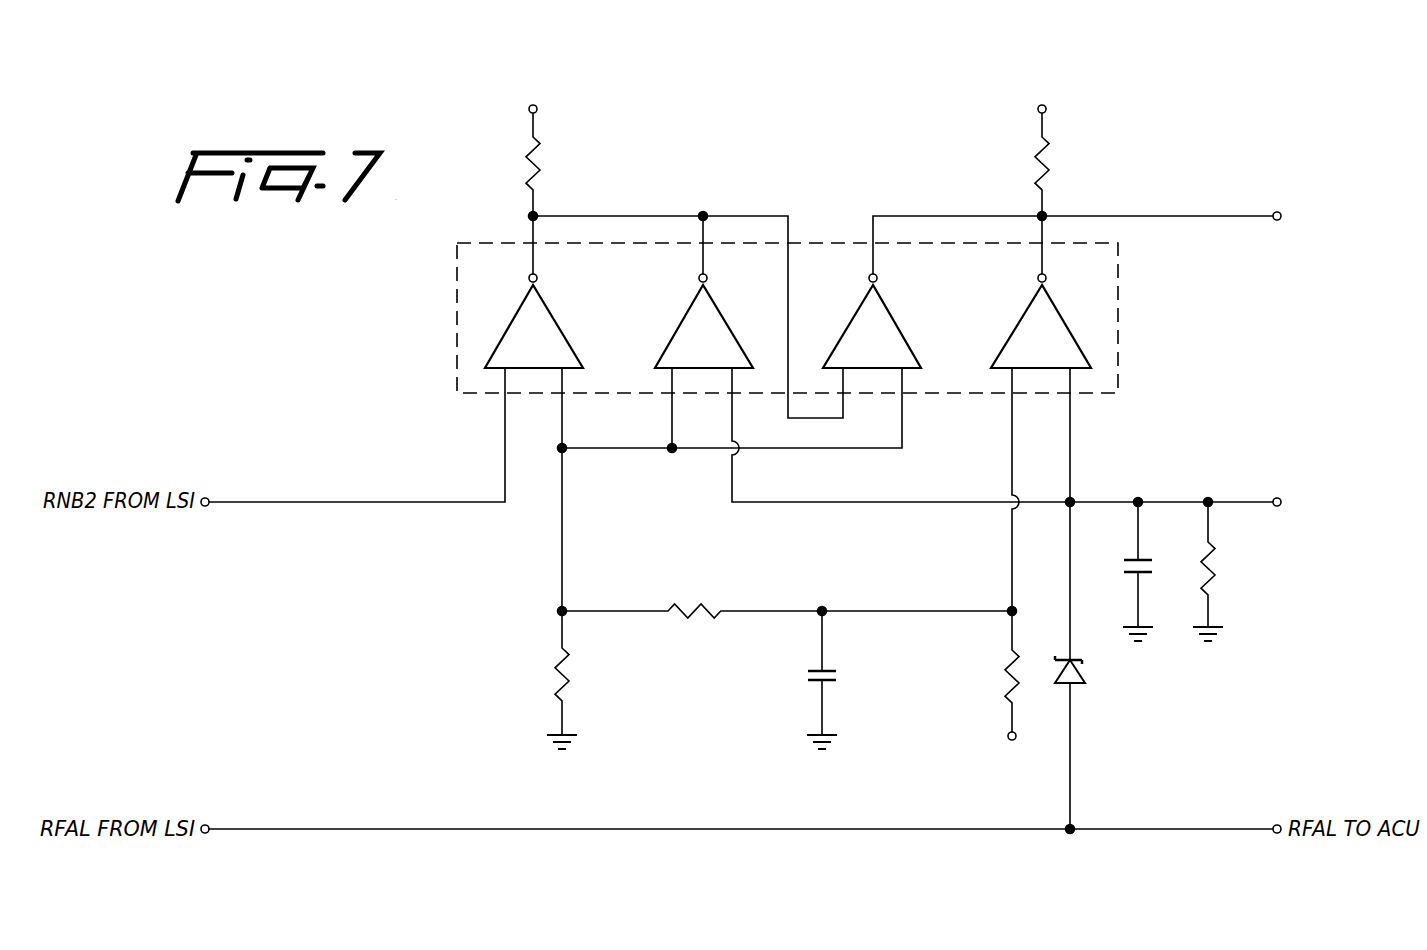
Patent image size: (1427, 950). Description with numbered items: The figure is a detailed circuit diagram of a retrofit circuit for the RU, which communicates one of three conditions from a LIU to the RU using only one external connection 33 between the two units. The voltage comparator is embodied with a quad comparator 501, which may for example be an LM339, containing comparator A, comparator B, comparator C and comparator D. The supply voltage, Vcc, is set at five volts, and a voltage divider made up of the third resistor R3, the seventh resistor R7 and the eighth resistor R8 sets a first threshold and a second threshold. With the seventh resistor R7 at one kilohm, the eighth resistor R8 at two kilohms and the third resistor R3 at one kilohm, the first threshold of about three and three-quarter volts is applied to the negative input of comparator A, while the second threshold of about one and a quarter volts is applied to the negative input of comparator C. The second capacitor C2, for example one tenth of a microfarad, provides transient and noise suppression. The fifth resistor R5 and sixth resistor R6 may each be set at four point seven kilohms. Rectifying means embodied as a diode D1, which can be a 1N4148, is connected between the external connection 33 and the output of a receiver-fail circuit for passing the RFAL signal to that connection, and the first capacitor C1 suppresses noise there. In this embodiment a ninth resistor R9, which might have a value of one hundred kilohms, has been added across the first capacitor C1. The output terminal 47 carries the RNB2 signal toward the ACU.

The quad comparator 501 is at (1118, 307).
The comparator A is at (534, 321).
The comparator B is at (704, 321).
The comparator C is at (872, 321).
The comparator D is at (1041, 321).
The fifth resistor R5 is at (543, 172).
The sixth resistor R6 is at (1052, 172).
The third resistor R3 is at (571, 680).
The seventh resistor R7 is at (1001, 693).
The eighth resistor R8 is at (787, 598).
The ninth resistor R9 is at (1218, 570).
The first capacitor C1 is at (1124, 570).
The second capacitor C2 is at (838, 680).
The diode D1 is at (1083, 672).
The RNB2 to ACU terminal 47 is at (1275, 212).
The external connection 33 is at (1275, 498).